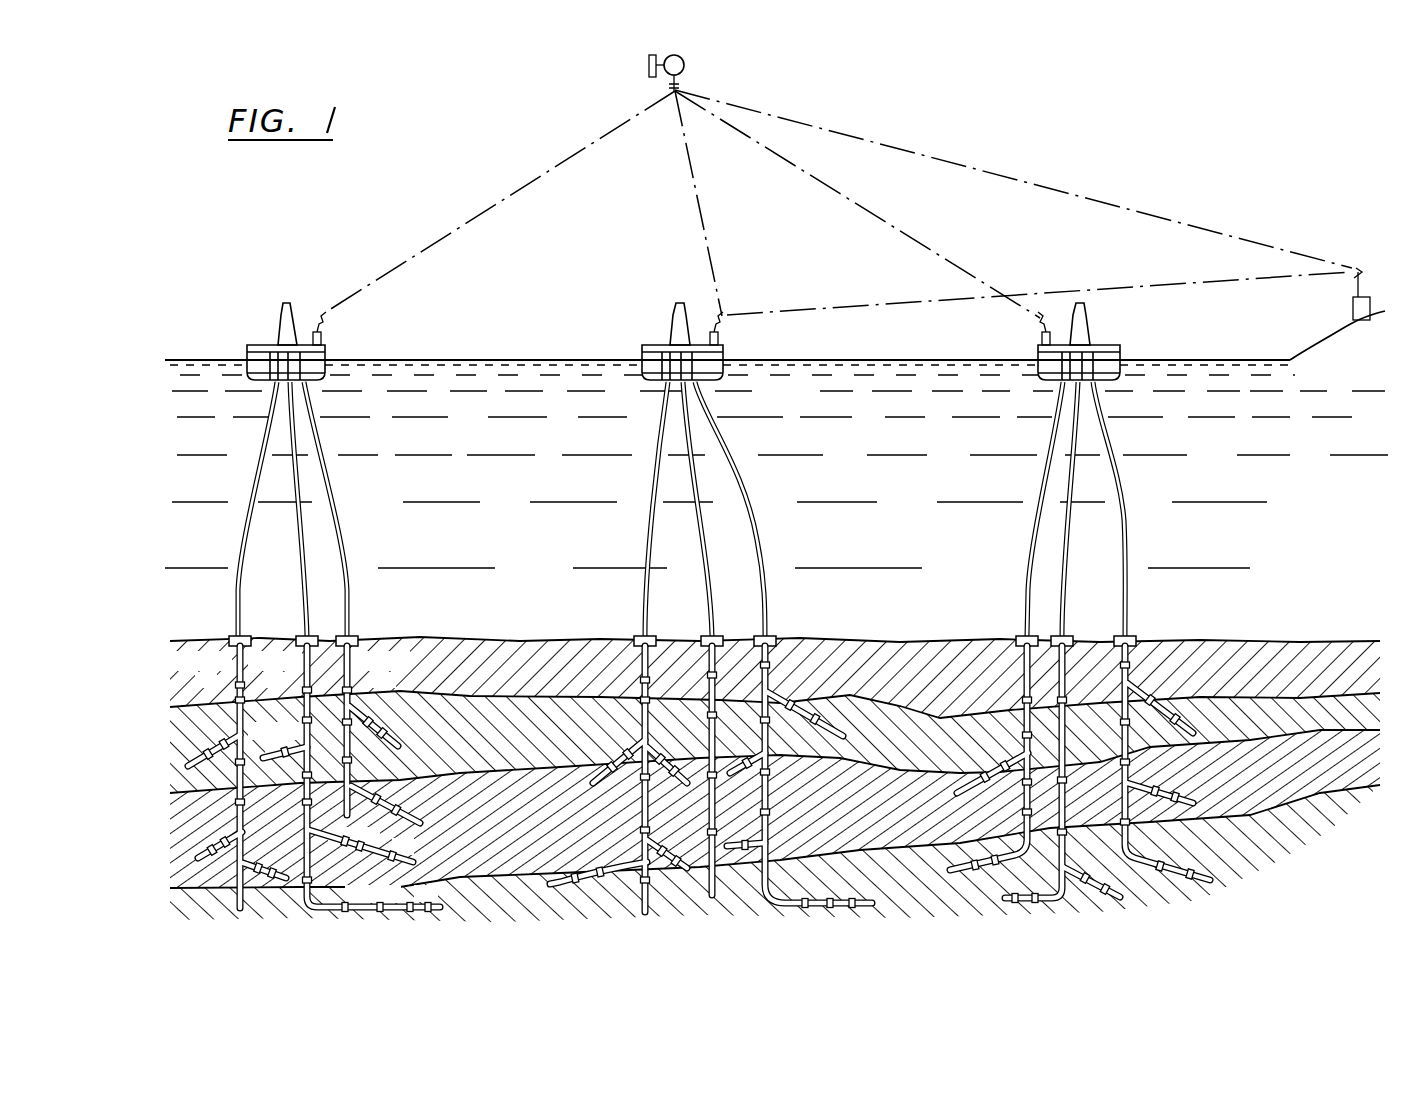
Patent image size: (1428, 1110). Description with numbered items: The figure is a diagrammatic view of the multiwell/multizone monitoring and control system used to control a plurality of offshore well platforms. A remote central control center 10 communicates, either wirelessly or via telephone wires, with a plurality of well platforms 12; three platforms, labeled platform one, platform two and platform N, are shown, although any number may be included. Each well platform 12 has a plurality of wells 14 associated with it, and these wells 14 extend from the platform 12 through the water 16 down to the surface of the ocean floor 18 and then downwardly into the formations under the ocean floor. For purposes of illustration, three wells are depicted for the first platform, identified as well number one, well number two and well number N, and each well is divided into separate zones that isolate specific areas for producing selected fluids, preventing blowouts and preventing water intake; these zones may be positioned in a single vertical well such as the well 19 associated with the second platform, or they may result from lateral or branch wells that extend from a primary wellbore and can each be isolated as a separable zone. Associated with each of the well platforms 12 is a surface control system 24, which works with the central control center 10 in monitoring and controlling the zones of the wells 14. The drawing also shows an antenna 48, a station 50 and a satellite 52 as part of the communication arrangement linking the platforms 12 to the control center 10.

The remote central control center 10 is at (1348, 297).
The well platform 12 is at (255, 344).
The wells 14 is at (333, 502).
The water 16 is at (560, 553).
The ocean floor 18 is at (525, 640).
The well 19 is at (655, 878).
The surface control system 24 is at (323, 340).
The antenna 48 is at (321, 324).
The central onshore station 50 is at (1358, 272).
The satellite 52 is at (686, 66).